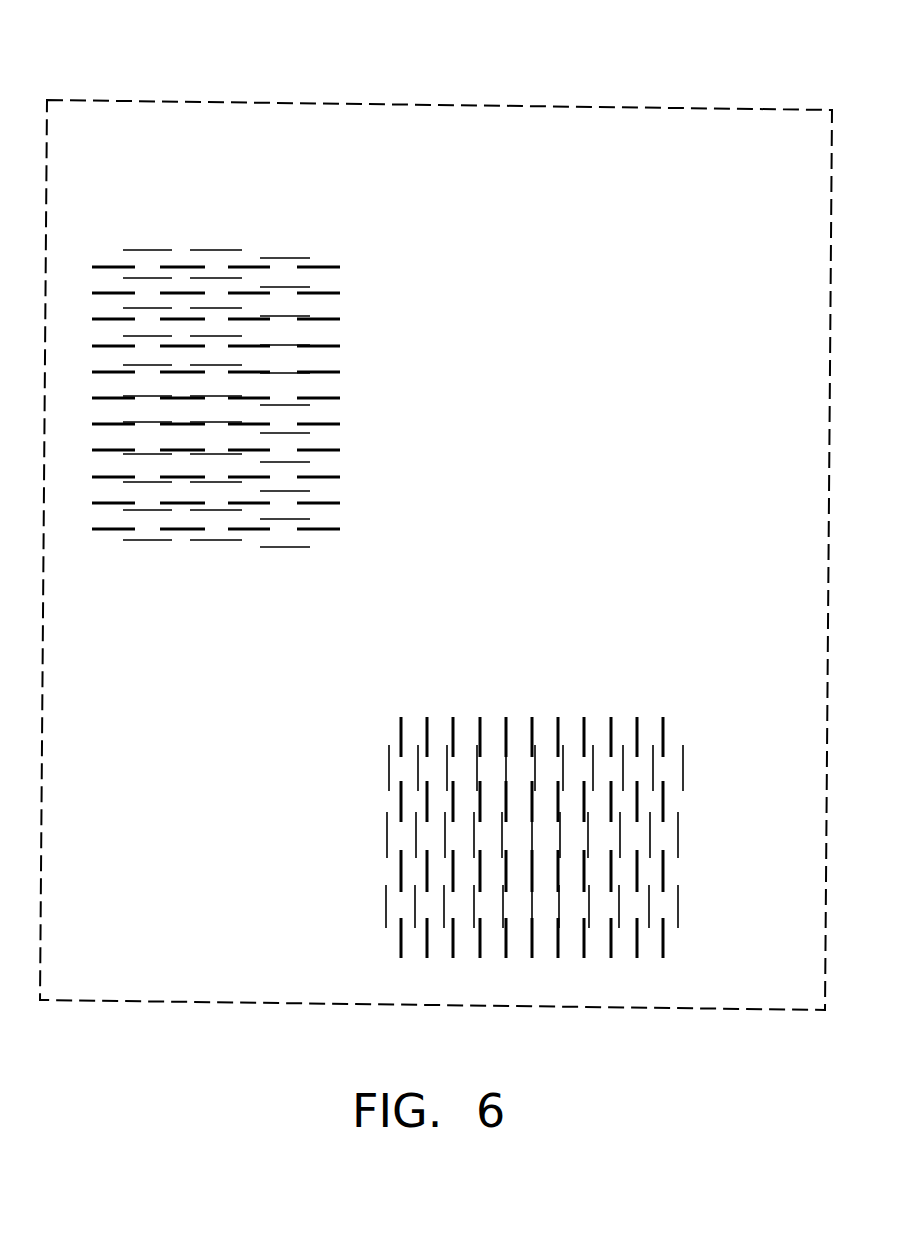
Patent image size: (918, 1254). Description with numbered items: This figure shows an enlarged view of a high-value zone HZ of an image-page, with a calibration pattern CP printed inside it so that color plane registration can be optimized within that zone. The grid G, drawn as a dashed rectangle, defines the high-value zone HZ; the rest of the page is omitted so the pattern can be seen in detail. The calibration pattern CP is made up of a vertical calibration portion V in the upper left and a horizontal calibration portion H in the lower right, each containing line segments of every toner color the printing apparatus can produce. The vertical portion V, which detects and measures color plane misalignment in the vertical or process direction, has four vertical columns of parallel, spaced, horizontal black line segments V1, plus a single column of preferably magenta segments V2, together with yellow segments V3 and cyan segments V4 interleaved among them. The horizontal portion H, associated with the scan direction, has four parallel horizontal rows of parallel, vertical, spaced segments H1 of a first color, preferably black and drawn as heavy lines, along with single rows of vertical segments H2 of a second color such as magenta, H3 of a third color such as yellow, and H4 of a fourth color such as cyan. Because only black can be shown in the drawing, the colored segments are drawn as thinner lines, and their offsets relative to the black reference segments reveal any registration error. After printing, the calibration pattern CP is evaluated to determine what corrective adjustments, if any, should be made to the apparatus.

The high-value zone HZ is at (460, 114).
The calibration pattern CP is at (709, 70).
The grid G is at (825, 1001).
The vertical calibration portion V is at (92, 223).
The horizontal black line segments V1 is at (216, 403).
The horizontal line segments of second color V2 is at (285, 403).
The yellow line segments V3 is at (216, 403).
The cyan line segments V4 is at (147, 403).
The horizontal calibration portion H is at (715, 695).
The vertical line segments of first color H1 is at (534, 837).
The vertical line segments of second color H2 is at (536, 768).
The vertical line segments of third color H3 is at (536, 835).
The vertical line segments of fourth color H4 is at (536, 906).